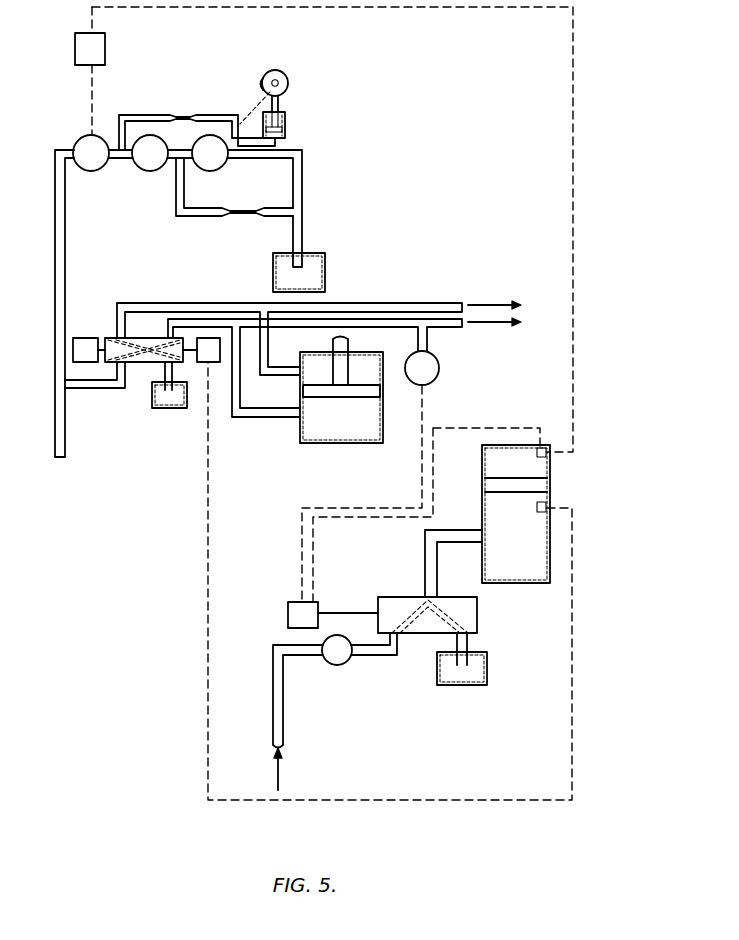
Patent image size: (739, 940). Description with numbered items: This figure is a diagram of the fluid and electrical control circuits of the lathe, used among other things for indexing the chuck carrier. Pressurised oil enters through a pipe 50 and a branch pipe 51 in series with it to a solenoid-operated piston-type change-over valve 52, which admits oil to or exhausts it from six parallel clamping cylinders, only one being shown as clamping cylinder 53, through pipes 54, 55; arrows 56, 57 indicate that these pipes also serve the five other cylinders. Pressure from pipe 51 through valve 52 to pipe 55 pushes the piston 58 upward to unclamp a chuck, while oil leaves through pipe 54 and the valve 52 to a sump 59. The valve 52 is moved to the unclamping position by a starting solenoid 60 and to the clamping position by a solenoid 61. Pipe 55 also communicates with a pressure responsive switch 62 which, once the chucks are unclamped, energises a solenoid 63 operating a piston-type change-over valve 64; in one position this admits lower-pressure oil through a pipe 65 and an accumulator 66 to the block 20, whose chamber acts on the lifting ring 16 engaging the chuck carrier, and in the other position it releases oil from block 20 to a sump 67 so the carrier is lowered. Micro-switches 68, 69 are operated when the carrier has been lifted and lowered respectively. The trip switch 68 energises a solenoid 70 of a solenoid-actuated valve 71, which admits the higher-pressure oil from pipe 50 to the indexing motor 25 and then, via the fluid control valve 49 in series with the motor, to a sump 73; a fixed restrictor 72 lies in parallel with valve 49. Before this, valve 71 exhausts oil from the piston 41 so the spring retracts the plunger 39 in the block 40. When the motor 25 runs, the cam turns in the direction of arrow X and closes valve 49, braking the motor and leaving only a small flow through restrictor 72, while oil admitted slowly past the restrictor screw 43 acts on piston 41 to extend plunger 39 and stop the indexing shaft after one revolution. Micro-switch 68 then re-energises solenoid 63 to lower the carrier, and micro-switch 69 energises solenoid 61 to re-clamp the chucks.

The lifting ring 16 is at (540, 487).
The block 20 is at (525, 583).
The fluid-operable motor 25 is at (150, 163).
The plunger 39 is at (278, 103).
The block 40 is at (285, 121).
The piston 41 is at (283, 129).
The restrictor screw 43 is at (187, 115).
The fluid control valve 49 is at (217, 168).
The pipe 50 is at (56, 432).
The branch pipe 51 is at (92, 388).
The change-over valve 52 is at (145, 365).
The clamping cylinder 53 is at (326, 433).
The pipe 54 is at (443, 303).
The pipe 55 is at (443, 326).
The arrow 56 is at (485, 304).
The arrow 57 is at (493, 323).
The piston 58 is at (372, 392).
The sump 59 is at (170, 405).
The starting solenoid 60 is at (87, 340).
The solenoid 61 is at (203, 338).
The pressure responsive switch 62 is at (430, 377).
The solenoid 63 is at (313, 612).
The change-over valve 64 is at (427, 628).
The pipe 65 is at (283, 708).
The accumulator 66 is at (338, 660).
The sump 67 is at (468, 675).
The micro-switch 68 is at (535, 426).
The micro-switch 69 is at (540, 512).
The solenoid 70 is at (82, 58).
The solenoid-actuated valve 71 is at (100, 162).
The fixed restrictor 72 is at (250, 218).
The sump 73 is at (317, 272).
The arrow X is at (280, 77).